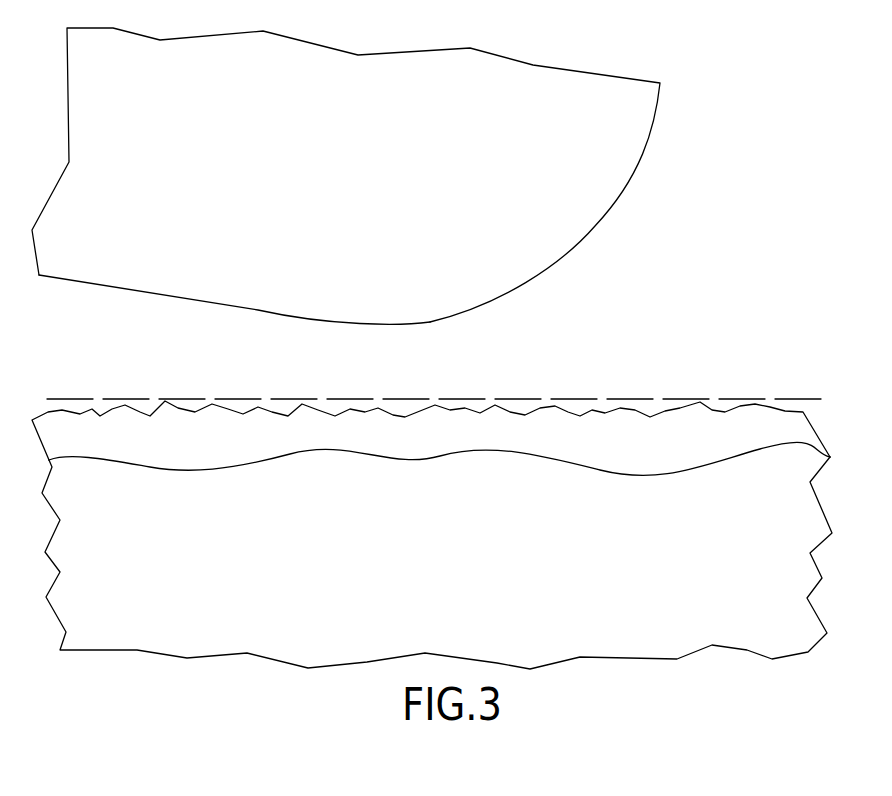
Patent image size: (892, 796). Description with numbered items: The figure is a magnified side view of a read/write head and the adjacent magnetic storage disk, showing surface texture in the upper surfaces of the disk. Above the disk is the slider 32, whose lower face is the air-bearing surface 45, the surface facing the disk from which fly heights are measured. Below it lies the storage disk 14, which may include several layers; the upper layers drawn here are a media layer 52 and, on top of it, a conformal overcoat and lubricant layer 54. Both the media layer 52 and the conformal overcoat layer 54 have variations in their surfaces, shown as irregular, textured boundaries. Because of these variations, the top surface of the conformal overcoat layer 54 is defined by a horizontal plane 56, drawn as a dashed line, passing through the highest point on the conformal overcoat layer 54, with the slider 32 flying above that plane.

The storage disk 14 is at (432, 564).
The slider 32 is at (360, 192).
The air-bearing surface 45 is at (258, 310).
The media layer 52 is at (462, 552).
The conformal overcoat and lubricant layer 54 is at (510, 443).
The horizontal plane 56 is at (148, 388).